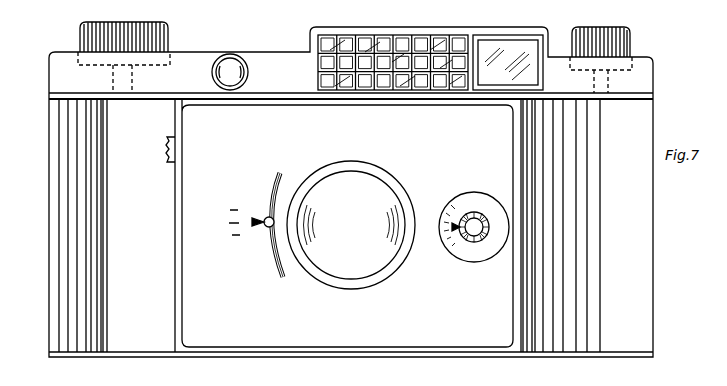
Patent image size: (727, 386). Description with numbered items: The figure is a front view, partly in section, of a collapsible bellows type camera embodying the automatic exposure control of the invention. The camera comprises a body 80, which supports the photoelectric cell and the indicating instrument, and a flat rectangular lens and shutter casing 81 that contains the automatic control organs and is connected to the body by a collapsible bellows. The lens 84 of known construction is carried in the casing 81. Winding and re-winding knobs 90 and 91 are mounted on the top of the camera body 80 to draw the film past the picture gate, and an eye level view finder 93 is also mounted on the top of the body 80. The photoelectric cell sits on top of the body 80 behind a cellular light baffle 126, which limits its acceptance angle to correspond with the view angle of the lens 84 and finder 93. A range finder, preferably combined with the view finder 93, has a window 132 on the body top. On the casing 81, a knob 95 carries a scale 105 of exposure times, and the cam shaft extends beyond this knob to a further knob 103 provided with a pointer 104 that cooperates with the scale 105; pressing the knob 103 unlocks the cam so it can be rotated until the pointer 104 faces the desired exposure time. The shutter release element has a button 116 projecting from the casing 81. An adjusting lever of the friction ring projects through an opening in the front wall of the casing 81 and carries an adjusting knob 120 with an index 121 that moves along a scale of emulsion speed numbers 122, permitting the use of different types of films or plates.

The body 80 is at (60, 192).
The lens and shutter casing 81 is at (468, 342).
The lens 84 is at (382, 200).
The winding knob 90 is at (143, 22).
The re-winding knob 91 is at (614, 31).
The eye level view finder 93 is at (507, 45).
The knob 95 is at (470, 193).
The knob 103 is at (478, 222).
The pointer 104 is at (456, 234).
The scale 105 is at (443, 236).
The shutter release button 116 is at (167, 150).
The adjusting knob 120 is at (272, 218).
The index 121 is at (264, 220).
The scale of emulsion speed numbers 122 is at (234, 226).
The light baffle 126 is at (405, 40).
The window 132 is at (228, 60).